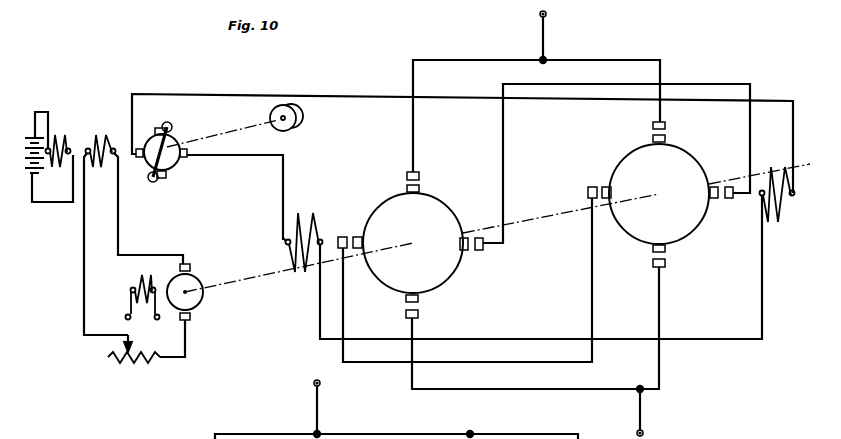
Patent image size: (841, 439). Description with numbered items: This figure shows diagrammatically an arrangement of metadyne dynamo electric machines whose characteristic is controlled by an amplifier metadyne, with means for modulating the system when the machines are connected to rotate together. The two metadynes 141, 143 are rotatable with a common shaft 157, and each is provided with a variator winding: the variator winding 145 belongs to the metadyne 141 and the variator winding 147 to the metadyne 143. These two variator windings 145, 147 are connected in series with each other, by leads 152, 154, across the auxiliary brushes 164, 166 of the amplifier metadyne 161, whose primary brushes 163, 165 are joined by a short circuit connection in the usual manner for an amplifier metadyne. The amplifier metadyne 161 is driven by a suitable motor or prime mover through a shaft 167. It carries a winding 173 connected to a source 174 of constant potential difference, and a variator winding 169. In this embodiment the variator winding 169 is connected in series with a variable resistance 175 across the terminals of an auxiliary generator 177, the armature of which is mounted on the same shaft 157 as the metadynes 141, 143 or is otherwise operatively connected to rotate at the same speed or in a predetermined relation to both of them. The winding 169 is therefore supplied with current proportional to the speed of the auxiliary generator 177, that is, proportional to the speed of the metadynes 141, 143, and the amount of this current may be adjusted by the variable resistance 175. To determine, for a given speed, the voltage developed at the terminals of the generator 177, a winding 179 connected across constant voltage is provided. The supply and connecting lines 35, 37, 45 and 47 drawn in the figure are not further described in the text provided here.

The supply line 35 is at (618, 48).
The supply line 37 is at (630, 388).
The supply line 45 is at (726, 86).
The connecting line 47 is at (350, 363).
The metadyne 141 is at (436, 201).
The metadyne 143 is at (625, 159).
The variator winding 145 is at (307, 205).
The variator winding 147 is at (775, 222).
The lead 152 is at (501, 337).
The lead 154 is at (330, 95).
The shaft 157 is at (528, 220).
The amplifier metadyne 161 is at (172, 168).
The primary brush 163 is at (165, 141).
The auxiliary brush 164 is at (188, 158).
The primary brush 165 is at (163, 180).
The auxiliary brush 166 is at (139, 160).
The shaft 167 is at (247, 127).
The variator winding 169 is at (96, 134).
The winding 173 is at (61, 132).
The source of constant potential difference 174 is at (19, 132).
The variable resistance 175 is at (134, 361).
The auxiliary generator 177 is at (200, 276).
The winding 179 is at (140, 274).